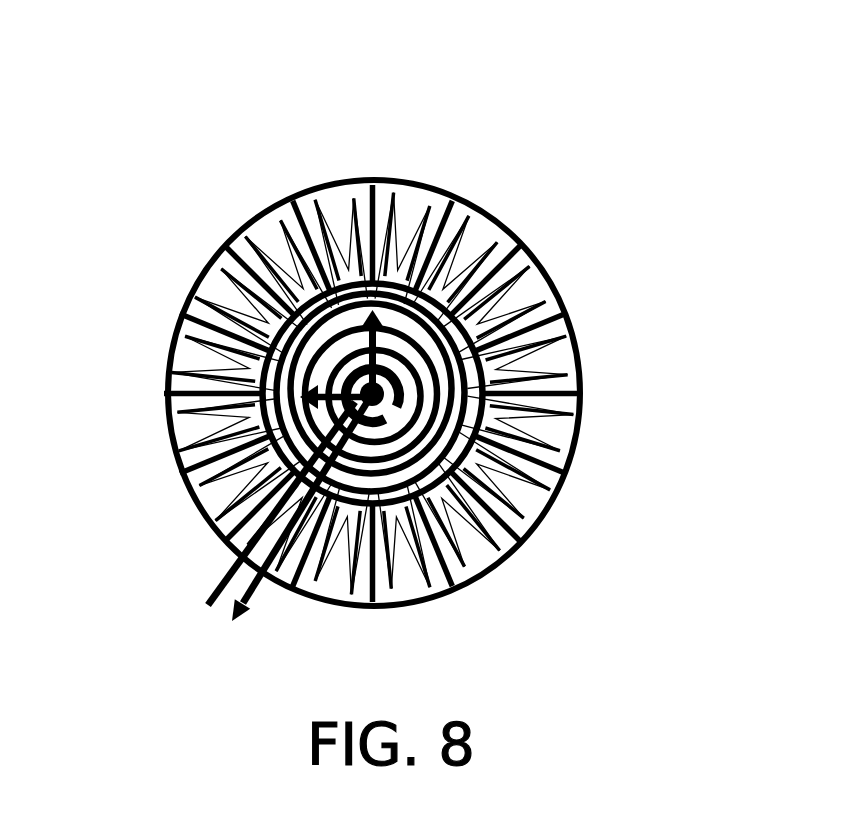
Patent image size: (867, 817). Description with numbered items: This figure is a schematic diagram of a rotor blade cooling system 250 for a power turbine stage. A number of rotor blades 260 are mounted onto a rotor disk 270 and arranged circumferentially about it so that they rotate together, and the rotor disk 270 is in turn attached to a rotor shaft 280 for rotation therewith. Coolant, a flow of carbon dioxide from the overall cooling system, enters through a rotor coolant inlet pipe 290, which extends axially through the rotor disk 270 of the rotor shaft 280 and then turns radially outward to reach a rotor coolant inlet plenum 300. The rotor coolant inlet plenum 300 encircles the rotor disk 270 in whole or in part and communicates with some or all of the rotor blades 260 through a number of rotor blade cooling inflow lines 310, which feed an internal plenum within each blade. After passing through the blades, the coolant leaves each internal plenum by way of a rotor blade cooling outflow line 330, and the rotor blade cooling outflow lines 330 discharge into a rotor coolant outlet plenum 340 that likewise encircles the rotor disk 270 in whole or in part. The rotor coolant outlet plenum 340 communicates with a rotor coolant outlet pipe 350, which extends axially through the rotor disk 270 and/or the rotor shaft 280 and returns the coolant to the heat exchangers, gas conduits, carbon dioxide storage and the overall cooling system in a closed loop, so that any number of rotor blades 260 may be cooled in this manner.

The rotor blade cooling system 250 is at (133, 113).
The rotor blades 260 is at (543, 263).
The rotor disk 270 is at (403, 434).
The rotor shaft 280 is at (400, 466).
The rotor coolant inlet pipe 290 is at (224, 583).
The rotor coolant inlet plenum 300 is at (290, 438).
The rotor blade cooling inflow lines 310 is at (557, 512).
The rotor blade cooling outflow lines 330 is at (440, 600).
The rotor coolant outlet plenum 340 is at (277, 379).
The rotor coolant outlet pipe 350 is at (251, 590).